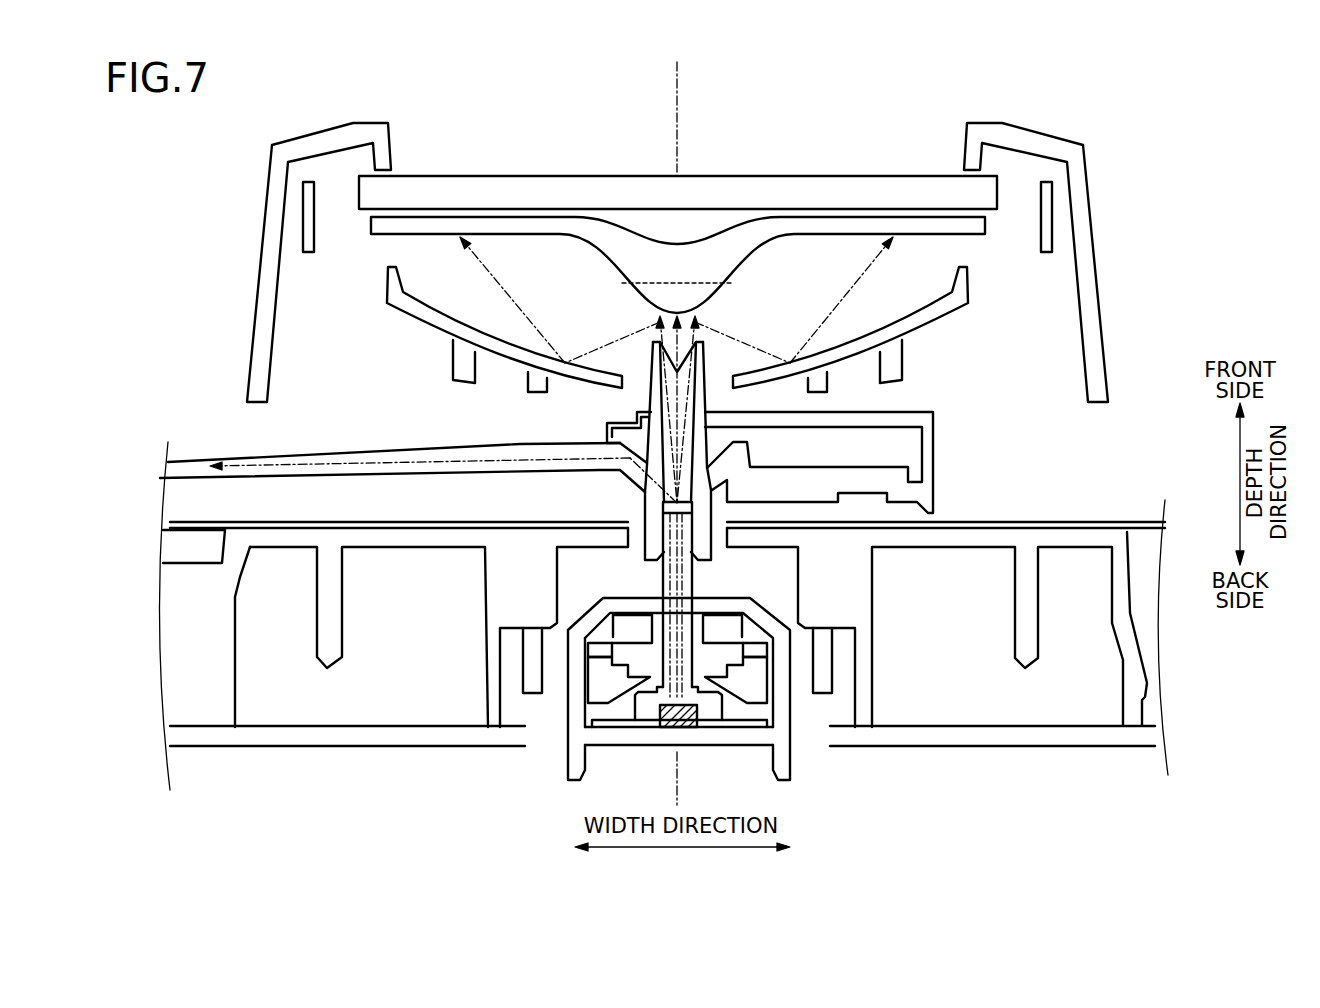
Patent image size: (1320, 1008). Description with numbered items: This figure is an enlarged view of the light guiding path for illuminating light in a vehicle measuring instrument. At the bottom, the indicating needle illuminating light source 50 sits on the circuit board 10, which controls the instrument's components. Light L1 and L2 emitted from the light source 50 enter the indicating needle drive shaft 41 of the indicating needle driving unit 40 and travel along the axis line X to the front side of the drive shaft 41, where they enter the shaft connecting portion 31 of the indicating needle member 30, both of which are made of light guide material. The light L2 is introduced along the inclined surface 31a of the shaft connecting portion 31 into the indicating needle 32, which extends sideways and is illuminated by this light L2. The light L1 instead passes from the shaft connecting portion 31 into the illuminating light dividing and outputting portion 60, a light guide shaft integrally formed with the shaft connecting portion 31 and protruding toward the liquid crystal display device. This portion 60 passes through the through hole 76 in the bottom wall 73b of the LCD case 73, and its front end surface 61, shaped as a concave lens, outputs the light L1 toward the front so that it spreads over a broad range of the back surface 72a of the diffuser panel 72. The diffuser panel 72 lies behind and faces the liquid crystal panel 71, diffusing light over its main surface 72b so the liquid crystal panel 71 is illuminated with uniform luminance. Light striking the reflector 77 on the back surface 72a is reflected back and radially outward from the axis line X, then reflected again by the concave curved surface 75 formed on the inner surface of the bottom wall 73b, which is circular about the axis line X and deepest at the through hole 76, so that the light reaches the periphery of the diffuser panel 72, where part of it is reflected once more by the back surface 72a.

The circuit board 10 is at (948, 737).
The indicating needle member 30 is at (390, 426).
The shaft connecting portion 31 is at (749, 463).
The inclined surface 31a is at (630, 457).
The indicating needle 32 is at (402, 452).
The indicating needle driving unit 40 is at (639, 697).
The indicating needle drive shaft 41 is at (687, 568).
The indicating needle illuminating light source 50 is at (673, 722).
The illuminating light dividing and outputting portion 60 is at (722, 428).
The front end surface 61 is at (690, 336).
The liquid crystal panel 71 is at (516, 186).
The diffuser panel 72 is at (678, 214).
The back surface 72a is at (557, 234).
The main surface 72b is at (555, 215).
The LCD case 73 is at (421, 338).
The bottom wall 73b is at (505, 357).
The curved surface 75 is at (472, 330).
The through hole 76 is at (632, 384).
The reflector 77 is at (708, 298).
The light L1 is at (688, 400).
The light L2 is at (452, 461).
The axis line X is at (677, 120).